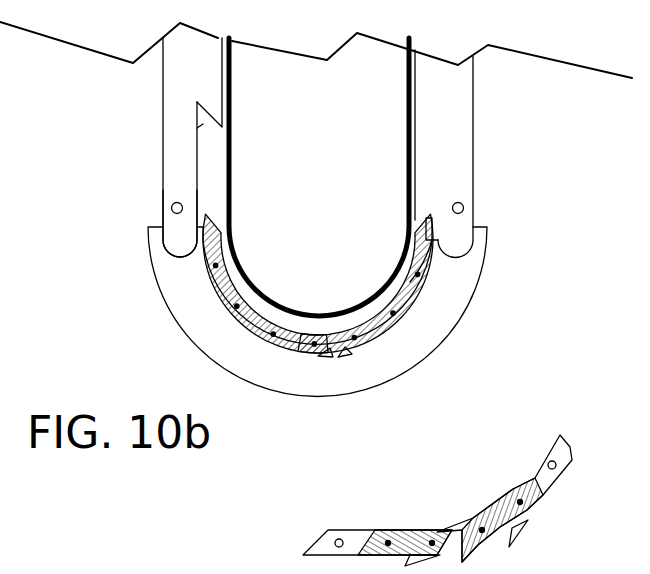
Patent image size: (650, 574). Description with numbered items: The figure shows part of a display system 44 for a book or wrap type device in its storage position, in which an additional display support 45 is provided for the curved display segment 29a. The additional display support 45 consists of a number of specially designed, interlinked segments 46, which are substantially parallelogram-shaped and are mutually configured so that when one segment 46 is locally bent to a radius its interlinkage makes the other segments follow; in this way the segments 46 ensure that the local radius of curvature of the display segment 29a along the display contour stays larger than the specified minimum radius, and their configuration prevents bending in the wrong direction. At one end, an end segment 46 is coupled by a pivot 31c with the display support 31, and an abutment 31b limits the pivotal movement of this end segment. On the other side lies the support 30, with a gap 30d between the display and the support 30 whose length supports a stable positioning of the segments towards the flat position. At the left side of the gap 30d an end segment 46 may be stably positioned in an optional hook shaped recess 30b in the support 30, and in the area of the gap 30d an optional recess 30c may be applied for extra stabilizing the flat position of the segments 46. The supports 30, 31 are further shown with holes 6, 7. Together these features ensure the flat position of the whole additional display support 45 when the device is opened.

The display segment 29a is at (317, 316).
The support 30 is at (172, 81).
The hook shaped recess 30b is at (198, 116).
The recess 30c is at (200, 128).
The gap 30d is at (210, 188).
The pivot hole 6 is at (170, 207).
The display support 31 is at (465, 128).
The pivot hole 7 is at (463, 206).
The abutment 31b is at (432, 222).
The pivot 31c is at (432, 241).
The display system 44 is at (147, 323).
The additional display support 45 is at (455, 515).
The segments 46 is at (400, 540).